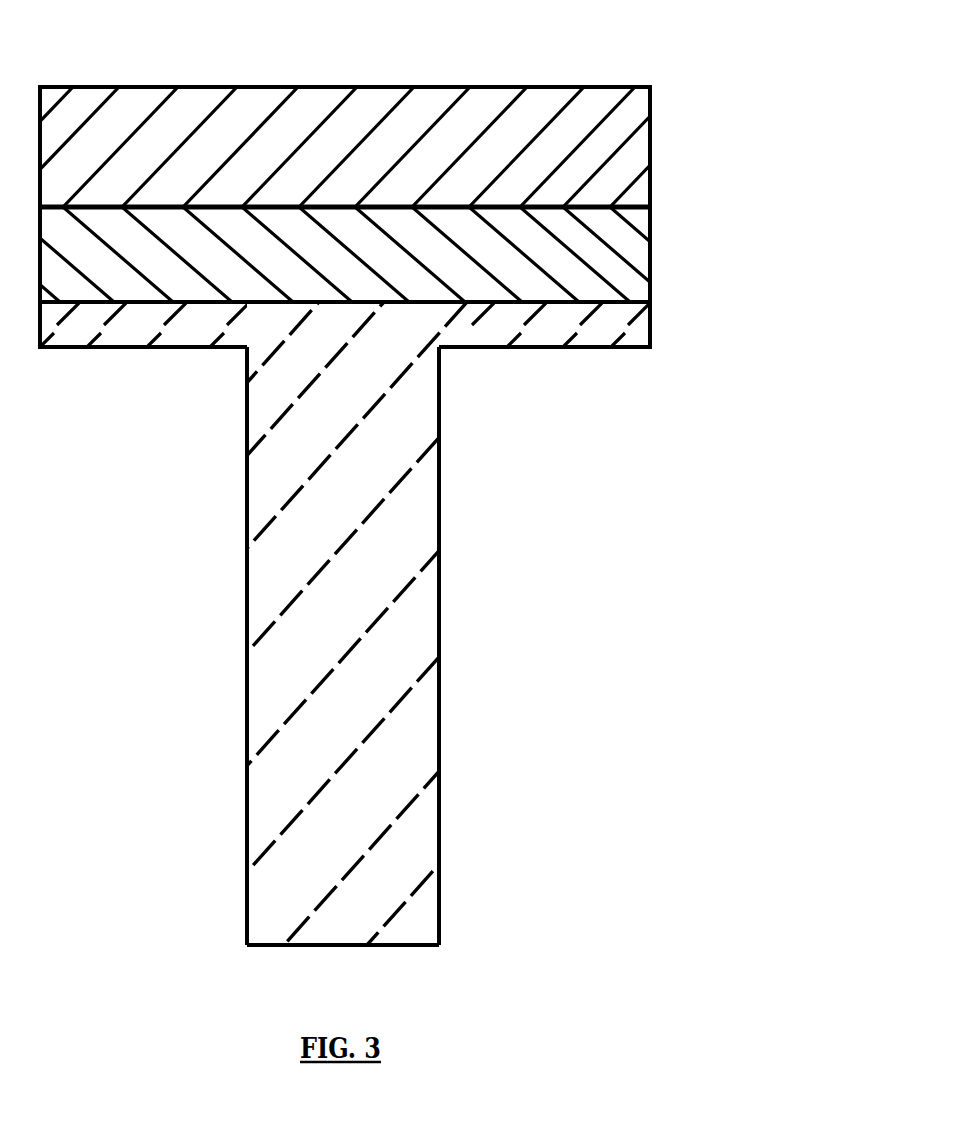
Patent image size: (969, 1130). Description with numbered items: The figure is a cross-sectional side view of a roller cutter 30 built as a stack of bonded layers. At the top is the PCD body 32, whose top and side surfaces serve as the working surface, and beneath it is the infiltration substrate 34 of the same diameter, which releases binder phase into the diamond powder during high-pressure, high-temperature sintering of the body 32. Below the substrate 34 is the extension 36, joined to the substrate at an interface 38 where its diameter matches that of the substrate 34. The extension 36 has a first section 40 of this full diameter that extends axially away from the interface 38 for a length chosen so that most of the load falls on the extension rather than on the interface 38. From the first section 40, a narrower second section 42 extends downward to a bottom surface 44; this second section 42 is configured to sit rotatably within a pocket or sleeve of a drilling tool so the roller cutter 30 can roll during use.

The roller cutter 30 is at (470, 505).
The body 32 is at (632, 168).
The infiltration substrate 34 is at (635, 222).
The extension 36 is at (410, 518).
The interface 38 is at (190, 305).
The first section 40 is at (652, 320).
The second section 42 is at (441, 688).
The bottom surface 44 is at (422, 946).